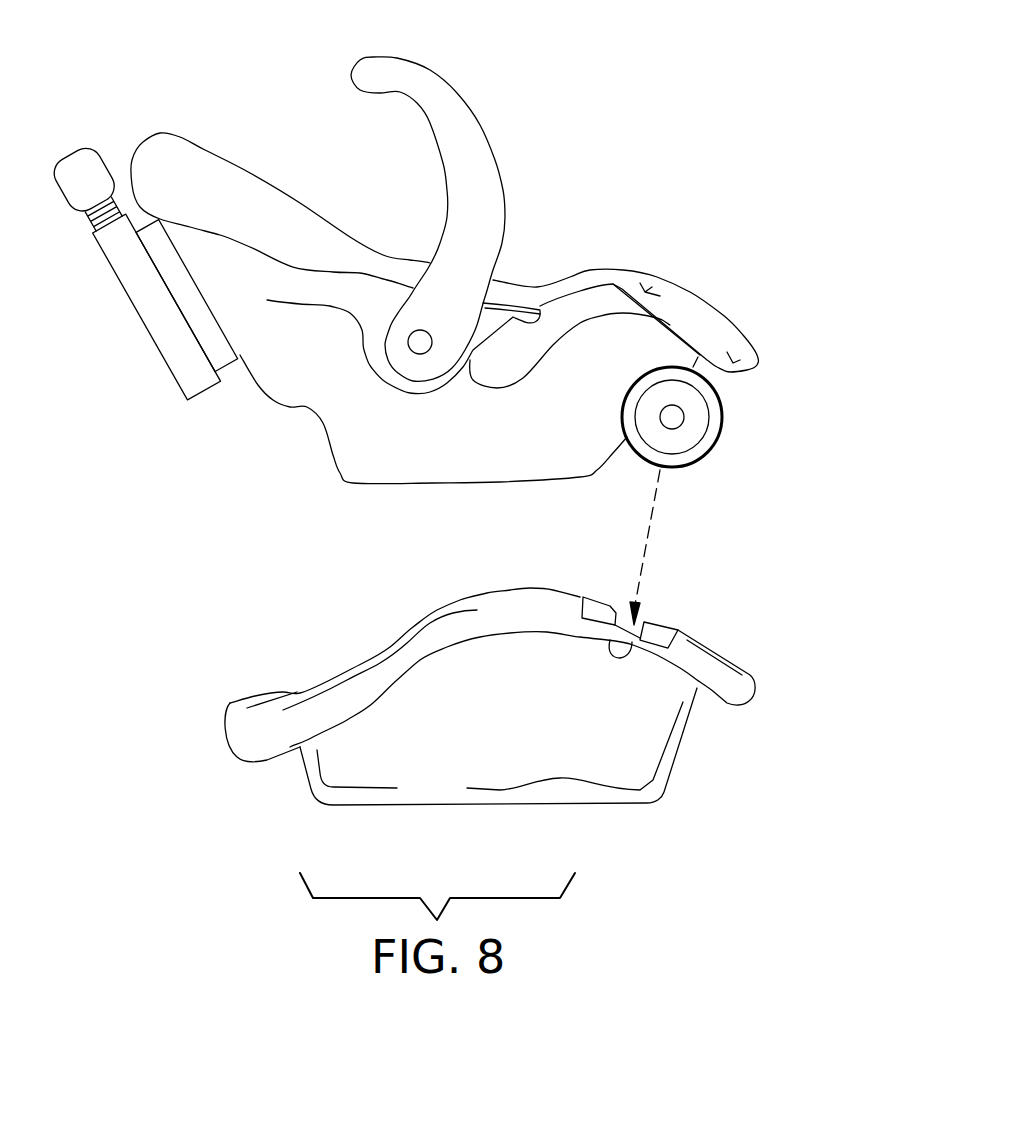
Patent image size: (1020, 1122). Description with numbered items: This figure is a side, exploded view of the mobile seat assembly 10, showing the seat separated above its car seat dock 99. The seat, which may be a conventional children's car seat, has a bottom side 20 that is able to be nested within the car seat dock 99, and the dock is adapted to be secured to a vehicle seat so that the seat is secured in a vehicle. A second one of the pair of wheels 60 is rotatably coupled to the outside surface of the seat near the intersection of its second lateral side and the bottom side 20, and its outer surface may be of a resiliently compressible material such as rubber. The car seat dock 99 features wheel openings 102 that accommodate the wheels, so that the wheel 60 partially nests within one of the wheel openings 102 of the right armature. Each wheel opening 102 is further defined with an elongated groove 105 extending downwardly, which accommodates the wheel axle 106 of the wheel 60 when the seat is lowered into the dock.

The mobile seat assembly 10 is at (697, 105).
The bottom side 20 is at (433, 483).
The second one of the pair of wheels 60 is at (721, 406).
The wheel axle 106 is at (684, 413).
The car seat dock 99 is at (687, 730).
The wheel openings 102 is at (655, 622).
The elongated groove 105 is at (617, 631).